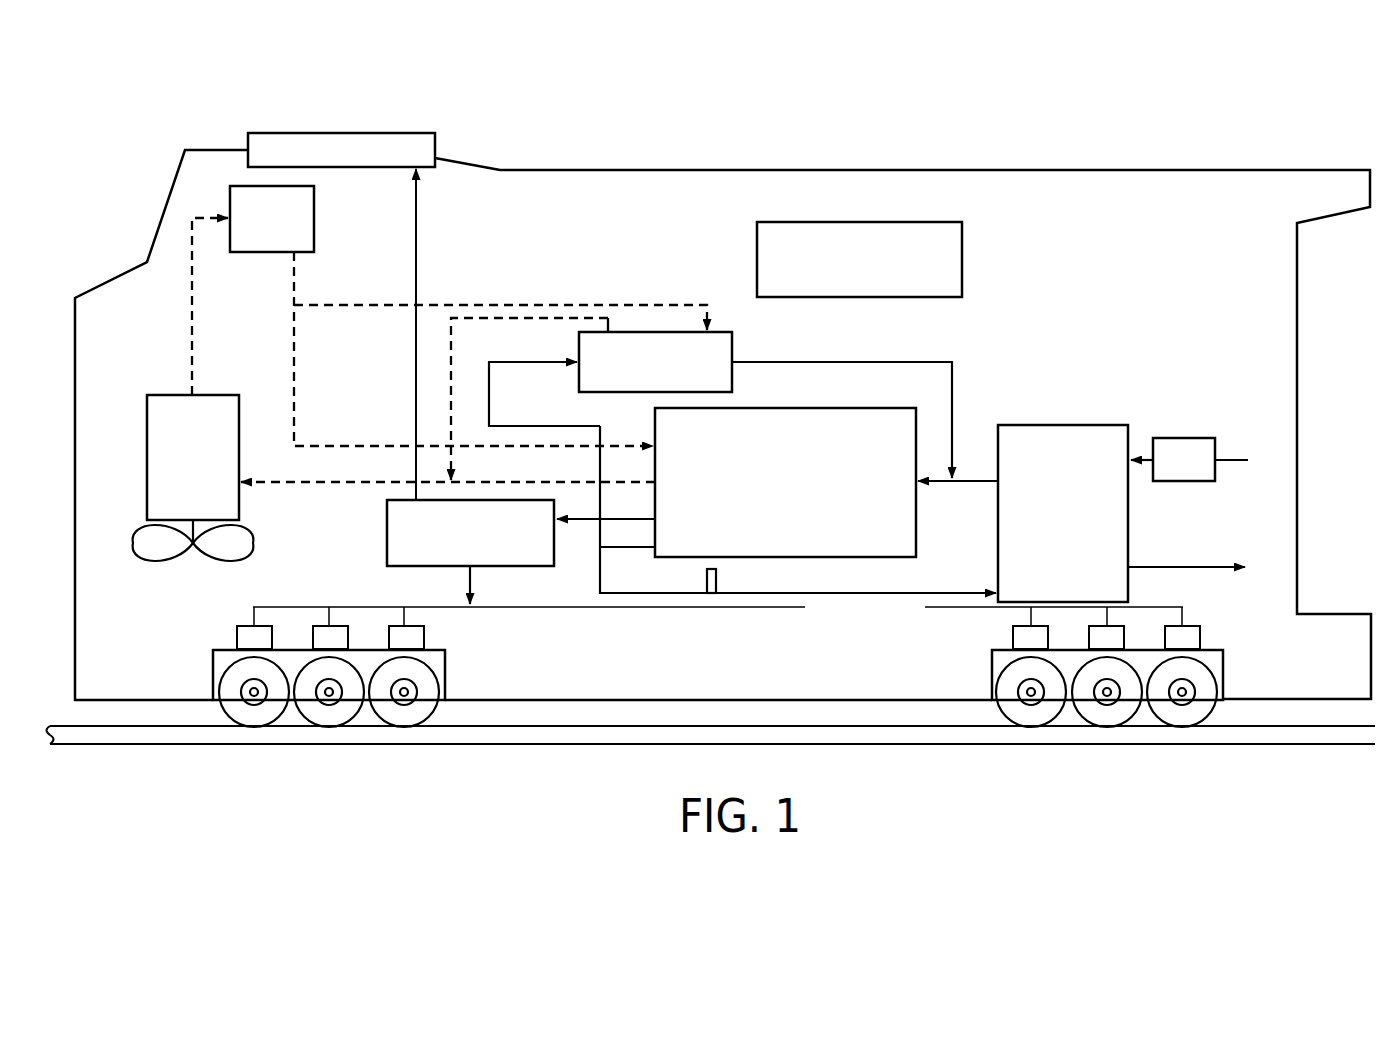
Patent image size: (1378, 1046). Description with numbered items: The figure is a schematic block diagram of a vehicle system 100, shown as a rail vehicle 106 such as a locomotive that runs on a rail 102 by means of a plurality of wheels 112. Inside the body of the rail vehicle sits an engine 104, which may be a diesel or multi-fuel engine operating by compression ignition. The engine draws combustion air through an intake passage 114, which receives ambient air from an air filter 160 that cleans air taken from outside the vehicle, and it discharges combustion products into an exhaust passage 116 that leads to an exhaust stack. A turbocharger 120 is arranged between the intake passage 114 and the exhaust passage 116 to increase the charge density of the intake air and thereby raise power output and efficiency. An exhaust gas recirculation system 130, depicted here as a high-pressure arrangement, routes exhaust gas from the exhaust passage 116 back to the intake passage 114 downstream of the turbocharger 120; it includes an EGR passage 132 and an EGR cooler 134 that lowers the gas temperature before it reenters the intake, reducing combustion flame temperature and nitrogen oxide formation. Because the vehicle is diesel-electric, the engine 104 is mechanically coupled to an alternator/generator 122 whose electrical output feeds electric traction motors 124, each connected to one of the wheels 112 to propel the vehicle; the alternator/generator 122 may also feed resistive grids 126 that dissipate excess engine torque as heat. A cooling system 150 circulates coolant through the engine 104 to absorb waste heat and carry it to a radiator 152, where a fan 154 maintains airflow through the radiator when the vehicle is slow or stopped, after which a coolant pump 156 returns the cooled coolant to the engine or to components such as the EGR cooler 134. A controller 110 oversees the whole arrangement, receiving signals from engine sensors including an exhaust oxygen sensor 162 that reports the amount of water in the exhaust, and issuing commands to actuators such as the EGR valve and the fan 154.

The vehicle system 100 is at (723, 381).
The rail 102 is at (1297, 745).
The engine 104 is at (785, 482).
The rail vehicle 106 is at (1030, 170).
The controller 110 is at (962, 233).
The wheels 112 is at (430, 683).
The intake passage 114 is at (977, 484).
The exhaust passage 116 is at (618, 549).
The turbocharger 120 is at (1063, 513).
The alternator/generator 122 is at (387, 537).
The electric traction motors 124 is at (425, 641).
The resistive grids 126 is at (419, 133).
The exhaust gas recirculation (EGR) system 130 is at (952, 346).
The EGR passage 132 is at (508, 362).
The EGR cooler 134 is at (655, 362).
The cooling system 150 is at (397, 373).
The radiator 152 is at (193, 457).
The fan 154 is at (141, 531).
The coolant pump 156 is at (272, 219).
The air filter 160 is at (1184, 459).
The exhaust oxygen sensor 162 is at (721, 578).